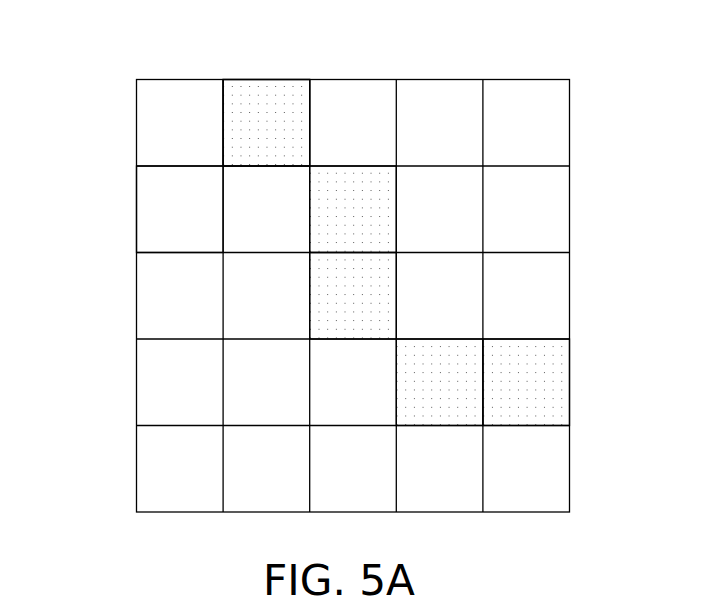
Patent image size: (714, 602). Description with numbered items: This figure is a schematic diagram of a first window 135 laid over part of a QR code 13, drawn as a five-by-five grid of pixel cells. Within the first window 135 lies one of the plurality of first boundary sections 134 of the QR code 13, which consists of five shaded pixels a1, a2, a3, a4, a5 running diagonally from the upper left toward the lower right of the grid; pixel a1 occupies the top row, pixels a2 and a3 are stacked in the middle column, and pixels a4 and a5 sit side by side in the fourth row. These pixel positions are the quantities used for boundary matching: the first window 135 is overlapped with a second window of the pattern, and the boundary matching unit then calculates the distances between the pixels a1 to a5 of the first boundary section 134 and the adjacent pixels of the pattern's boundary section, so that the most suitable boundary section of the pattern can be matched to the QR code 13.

The QR code 13 is at (117, 61).
The first boundary section 134 is at (222, 123).
The first window 135 is at (127, 214).
The pixel a1 is at (255, 113).
The pixel a2 is at (342, 205).
The pixel a3 is at (353, 292).
The pixel a4 is at (443, 385).
The pixel a5 is at (522, 387).